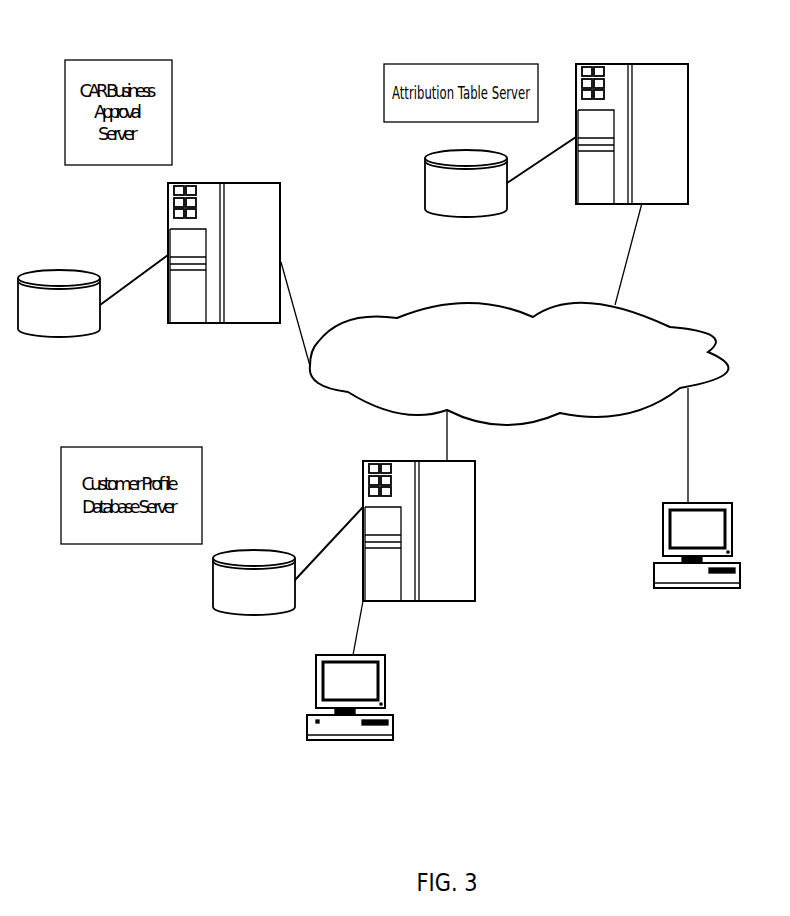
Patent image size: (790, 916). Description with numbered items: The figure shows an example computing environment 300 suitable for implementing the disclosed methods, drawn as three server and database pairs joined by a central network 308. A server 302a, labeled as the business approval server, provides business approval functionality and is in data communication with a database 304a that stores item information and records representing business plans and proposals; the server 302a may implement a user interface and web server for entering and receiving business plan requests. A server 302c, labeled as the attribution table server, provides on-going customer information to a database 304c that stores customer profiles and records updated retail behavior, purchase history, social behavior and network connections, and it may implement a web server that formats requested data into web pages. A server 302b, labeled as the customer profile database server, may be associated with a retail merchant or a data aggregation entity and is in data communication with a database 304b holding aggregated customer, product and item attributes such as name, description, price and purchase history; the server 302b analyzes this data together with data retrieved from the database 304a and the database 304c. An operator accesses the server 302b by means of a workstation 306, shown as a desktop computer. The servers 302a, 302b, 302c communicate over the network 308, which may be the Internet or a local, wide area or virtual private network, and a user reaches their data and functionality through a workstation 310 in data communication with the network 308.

The computing environment 300 is at (287, 88).
The server 302a is at (224, 253).
The server 302b is at (419, 531).
The server 302c is at (632, 134).
The database 304a is at (93, 296).
The database 304b is at (288, 561).
The database 304c is at (500, 177).
The workstation 306 is at (350, 697).
The network 308 is at (519, 364).
The workstation 310 is at (697, 545).